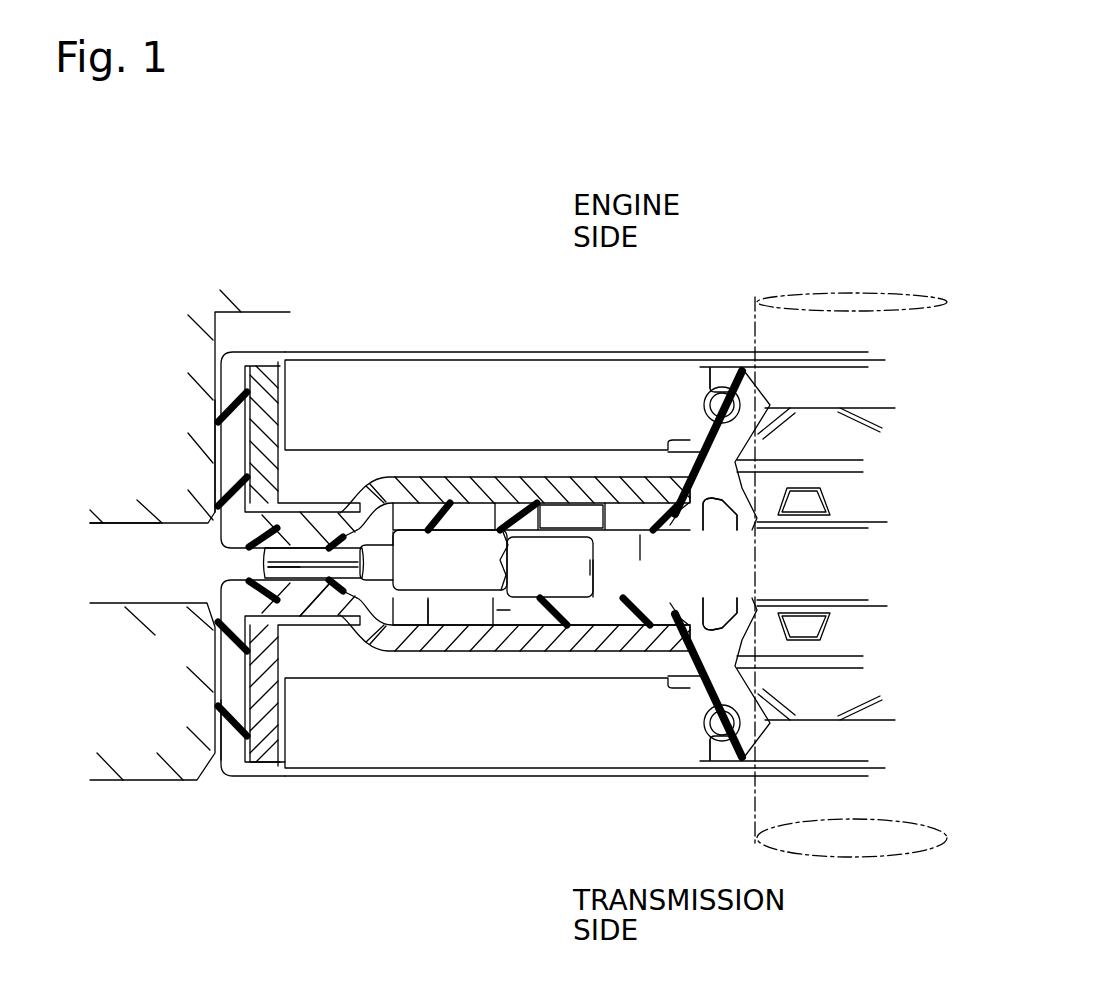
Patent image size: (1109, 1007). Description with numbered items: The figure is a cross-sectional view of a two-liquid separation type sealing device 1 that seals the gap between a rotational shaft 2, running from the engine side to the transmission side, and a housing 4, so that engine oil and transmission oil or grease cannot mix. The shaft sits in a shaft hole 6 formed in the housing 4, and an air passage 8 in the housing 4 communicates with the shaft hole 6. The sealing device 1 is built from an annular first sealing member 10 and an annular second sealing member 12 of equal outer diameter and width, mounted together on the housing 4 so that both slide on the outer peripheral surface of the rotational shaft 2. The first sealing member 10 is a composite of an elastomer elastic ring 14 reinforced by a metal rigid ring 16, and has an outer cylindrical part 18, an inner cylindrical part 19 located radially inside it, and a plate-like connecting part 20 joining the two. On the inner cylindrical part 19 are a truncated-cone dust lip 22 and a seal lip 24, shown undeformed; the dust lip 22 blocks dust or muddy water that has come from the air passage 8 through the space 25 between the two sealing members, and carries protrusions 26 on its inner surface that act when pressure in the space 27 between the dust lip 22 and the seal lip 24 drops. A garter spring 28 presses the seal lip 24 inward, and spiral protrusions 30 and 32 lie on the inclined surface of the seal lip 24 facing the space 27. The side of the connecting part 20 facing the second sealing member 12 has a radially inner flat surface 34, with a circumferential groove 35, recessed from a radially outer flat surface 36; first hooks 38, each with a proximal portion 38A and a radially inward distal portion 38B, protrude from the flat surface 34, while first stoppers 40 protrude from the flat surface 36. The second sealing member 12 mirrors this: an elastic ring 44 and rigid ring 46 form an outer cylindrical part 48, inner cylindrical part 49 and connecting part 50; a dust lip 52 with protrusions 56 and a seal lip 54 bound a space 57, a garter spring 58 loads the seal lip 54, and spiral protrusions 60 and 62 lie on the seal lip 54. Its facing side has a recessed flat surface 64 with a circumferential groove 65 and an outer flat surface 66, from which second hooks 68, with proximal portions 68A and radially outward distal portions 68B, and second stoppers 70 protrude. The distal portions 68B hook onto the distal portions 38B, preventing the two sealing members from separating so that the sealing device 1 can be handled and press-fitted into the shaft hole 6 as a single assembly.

The sealing device 1 is at (358, 200).
The rotational shaft 2 is at (757, 830).
The housing 4 is at (145, 782).
The shaft hole 6 is at (278, 765).
The air passage 8 is at (128, 528).
The first sealing member 10 is at (423, 318).
The second sealing member 12 is at (417, 802).
The elastic ring 14 is at (260, 360).
The rigid ring 16 is at (265, 387).
The outer cylindrical part 18 is at (215, 465).
The inner cylindrical part 19 is at (718, 385).
The connecting part 20 is at (620, 513).
The dust lip 22 is at (738, 525).
The seal lip 24 is at (763, 393).
The space 25 is at (645, 555).
The protrusion 26 is at (806, 514).
The space 27 is at (747, 455).
The garter spring 28 is at (705, 402).
The spiral protrusion 30 is at (772, 428).
The spiral protrusion 32 is at (862, 425).
The flat surface 34 is at (470, 537).
The circumferential groove 35 is at (580, 510).
The flat surface 36 is at (400, 553).
The first hook 38 is at (420, 558).
The proximal portion 38A is at (428, 562).
The distal portion 38B is at (505, 578).
The first stopper 40 is at (265, 554).
The elastic ring 44 is at (275, 770).
The rigid ring 46 is at (268, 740).
The outer cylindrical part 48 is at (222, 650).
The inner cylindrical part 49 is at (716, 760).
The connecting part 50 is at (585, 598).
The dust lip 52 is at (742, 598).
The seal lip 54 is at (762, 733).
The protrusion 56 is at (807, 612).
The space 57 is at (747, 673).
The garter spring 58 is at (707, 727).
The spiral protrusion 60 is at (772, 710).
The spiral protrusion 62 is at (862, 712).
The flat surface 64 is at (548, 600).
The circumferential groove 65 is at (440, 620).
The flat surface 66 is at (338, 607).
The second hook 68 is at (626, 600).
The proximal portion 68A is at (600, 573).
The distal portion 68B is at (500, 620).
The second stopper 70 is at (265, 571).